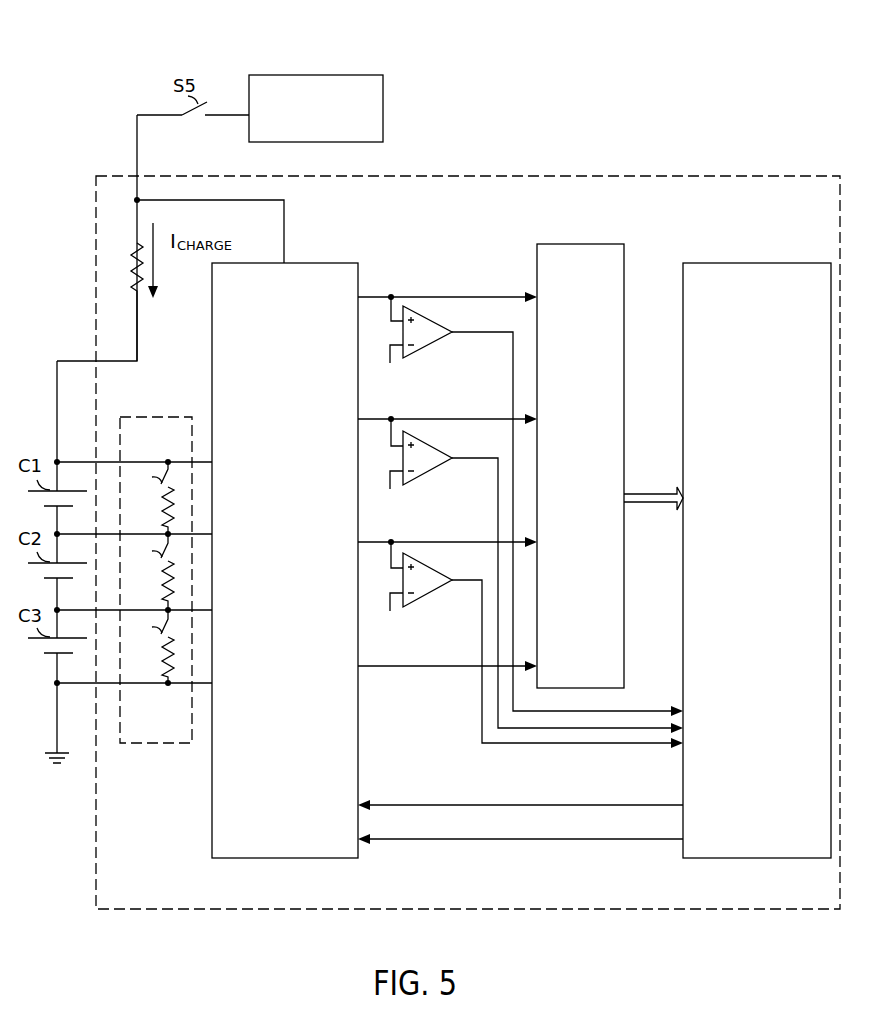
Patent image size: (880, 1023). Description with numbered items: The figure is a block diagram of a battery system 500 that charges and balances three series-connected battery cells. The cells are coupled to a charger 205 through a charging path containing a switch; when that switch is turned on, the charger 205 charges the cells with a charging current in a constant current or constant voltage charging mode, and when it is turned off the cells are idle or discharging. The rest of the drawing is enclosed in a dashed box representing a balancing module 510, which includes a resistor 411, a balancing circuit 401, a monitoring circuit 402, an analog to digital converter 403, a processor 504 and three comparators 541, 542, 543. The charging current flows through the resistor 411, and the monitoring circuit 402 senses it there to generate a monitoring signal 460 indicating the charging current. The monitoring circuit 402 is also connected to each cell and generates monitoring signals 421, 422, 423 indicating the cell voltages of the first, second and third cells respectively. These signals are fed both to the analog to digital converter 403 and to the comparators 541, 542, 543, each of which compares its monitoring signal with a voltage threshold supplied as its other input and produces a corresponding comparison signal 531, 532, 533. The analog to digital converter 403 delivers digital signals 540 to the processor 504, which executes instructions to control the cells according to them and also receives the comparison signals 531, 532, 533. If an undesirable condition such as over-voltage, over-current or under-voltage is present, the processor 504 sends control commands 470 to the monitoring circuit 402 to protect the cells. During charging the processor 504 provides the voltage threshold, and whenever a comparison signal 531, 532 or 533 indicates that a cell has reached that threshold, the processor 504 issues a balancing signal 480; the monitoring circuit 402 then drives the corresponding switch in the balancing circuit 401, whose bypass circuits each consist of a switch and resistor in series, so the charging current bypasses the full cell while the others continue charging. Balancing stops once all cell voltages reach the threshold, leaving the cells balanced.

The battery system 500 is at (140, 86).
The charger 205 is at (300, 132).
The balancing module 510 is at (627, 176).
The resistor 411 is at (137, 244).
The balancing circuit 401 is at (155, 417).
The monitoring circuit 402 is at (270, 601).
The analog to digital converter 403 is at (596, 493).
The processor 504 is at (773, 588).
The digital signals 540 is at (657, 474).
The monitoring signal 421 is at (372, 297).
The monitoring signal 422 is at (372, 419).
The monitoring signal 423 is at (373, 542).
The monitoring signal 460 is at (392, 666).
The control commands 470 is at (472, 805).
The balancing signal 480 is at (472, 839).
The comparison signal 531 is at (453, 333).
The comparison signal 532 is at (453, 458).
The comparison signal 533 is at (453, 580).
The comparator 541 is at (425, 348).
The comparator 542 is at (426, 474).
The comparator 543 is at (428, 596).